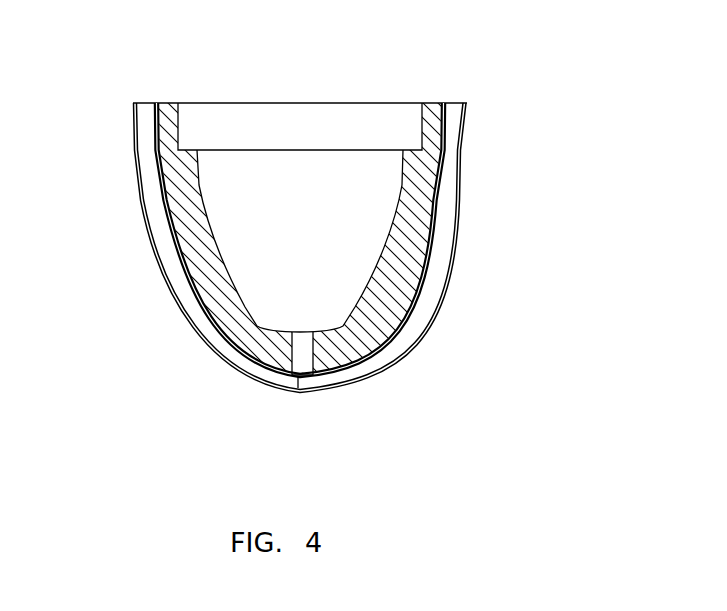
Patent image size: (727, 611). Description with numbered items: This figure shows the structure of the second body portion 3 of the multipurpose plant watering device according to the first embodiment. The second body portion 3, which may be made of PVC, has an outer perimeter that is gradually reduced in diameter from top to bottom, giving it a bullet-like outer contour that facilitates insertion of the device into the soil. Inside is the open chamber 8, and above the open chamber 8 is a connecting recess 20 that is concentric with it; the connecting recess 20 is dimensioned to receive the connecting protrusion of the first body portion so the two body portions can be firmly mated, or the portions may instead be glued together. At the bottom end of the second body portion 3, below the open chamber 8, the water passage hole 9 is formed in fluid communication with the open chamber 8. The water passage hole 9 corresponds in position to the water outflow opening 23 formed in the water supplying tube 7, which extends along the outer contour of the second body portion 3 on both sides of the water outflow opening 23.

The second body portion 3 is at (193, 270).
The water supplying tube 7 is at (398, 332).
The open chamber 8 is at (352, 252).
The connecting recess 20 is at (240, 128).
The water passage hole 9 is at (292, 355).
The water outflow opening 23 is at (298, 377).